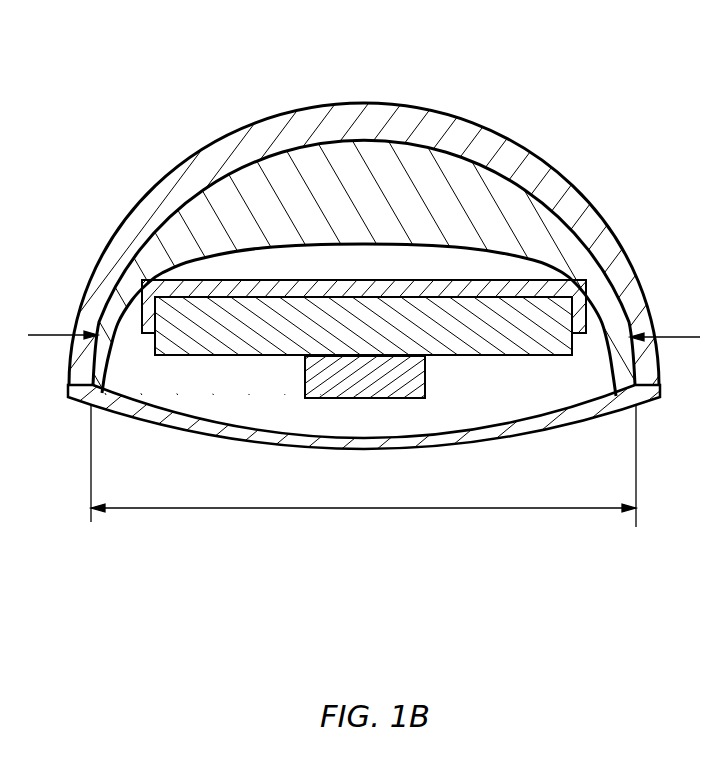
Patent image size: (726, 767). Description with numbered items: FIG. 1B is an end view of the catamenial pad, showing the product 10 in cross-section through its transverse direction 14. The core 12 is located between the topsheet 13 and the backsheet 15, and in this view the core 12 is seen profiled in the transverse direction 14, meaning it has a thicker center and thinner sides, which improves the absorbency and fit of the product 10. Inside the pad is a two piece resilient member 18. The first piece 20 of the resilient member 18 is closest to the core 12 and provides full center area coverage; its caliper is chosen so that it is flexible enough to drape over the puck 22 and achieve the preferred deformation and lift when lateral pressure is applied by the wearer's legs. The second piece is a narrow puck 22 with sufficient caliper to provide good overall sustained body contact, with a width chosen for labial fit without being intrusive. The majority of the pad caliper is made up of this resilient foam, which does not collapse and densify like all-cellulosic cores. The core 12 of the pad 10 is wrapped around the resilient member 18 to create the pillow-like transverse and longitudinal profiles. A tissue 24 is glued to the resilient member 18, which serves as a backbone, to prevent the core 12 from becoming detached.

The product 10 is at (363, 263).
The core 12 is at (538, 207).
The topsheet 13 is at (512, 435).
The transverse direction 14 is at (364, 508).
The backsheet 15 is at (523, 150).
The resilient member 18 is at (468, 348).
The first piece 20 is at (263, 340).
The puck 22 is at (343, 387).
The tissue 24 is at (582, 333).